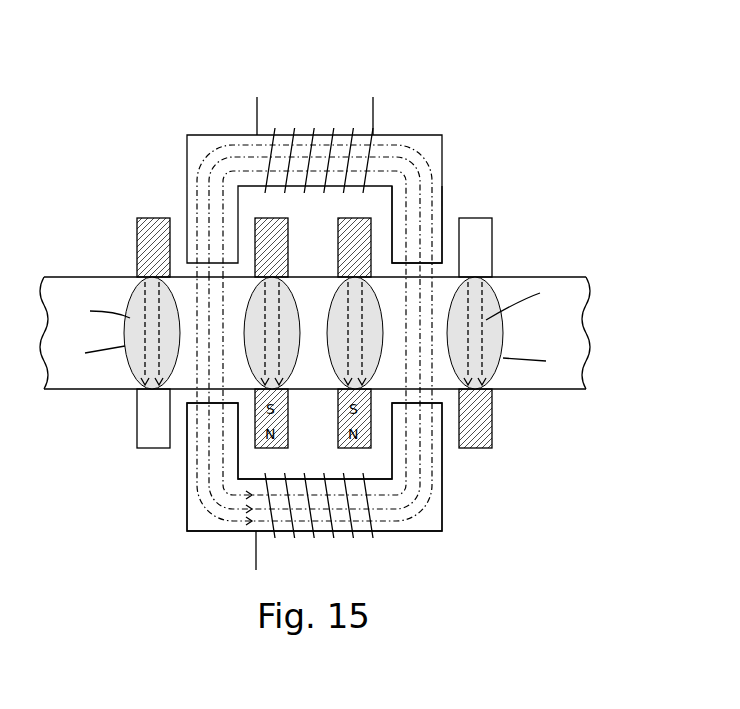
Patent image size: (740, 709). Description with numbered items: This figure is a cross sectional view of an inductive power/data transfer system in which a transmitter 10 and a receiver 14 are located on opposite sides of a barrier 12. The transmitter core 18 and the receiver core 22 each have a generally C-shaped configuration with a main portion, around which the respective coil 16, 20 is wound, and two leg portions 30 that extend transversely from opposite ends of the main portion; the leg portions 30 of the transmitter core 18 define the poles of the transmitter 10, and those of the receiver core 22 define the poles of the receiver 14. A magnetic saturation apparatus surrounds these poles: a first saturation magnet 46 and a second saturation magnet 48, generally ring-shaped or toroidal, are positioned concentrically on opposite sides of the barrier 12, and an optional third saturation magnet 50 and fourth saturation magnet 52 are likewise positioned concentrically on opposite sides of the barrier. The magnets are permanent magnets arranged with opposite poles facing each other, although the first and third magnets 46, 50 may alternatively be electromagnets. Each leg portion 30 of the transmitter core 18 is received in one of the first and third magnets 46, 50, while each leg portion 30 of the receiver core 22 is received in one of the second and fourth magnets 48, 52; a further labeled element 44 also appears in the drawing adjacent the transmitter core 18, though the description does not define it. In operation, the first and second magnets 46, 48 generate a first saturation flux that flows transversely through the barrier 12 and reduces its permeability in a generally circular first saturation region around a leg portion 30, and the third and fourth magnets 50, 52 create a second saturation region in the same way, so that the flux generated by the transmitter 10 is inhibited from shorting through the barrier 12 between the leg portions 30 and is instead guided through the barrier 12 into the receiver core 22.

The transmitter 10 is at (468, 117).
The barrier 12 is at (65, 396).
The receiver 14 is at (473, 507).
The coil 16 is at (333, 128).
The transmitter core 18 is at (217, 132).
The coil 20 is at (293, 542).
The receiver core 22 is at (210, 533).
The leg portions 30 is at (188, 205).
The pole piece 44 is at (446, 232).
The first saturation magnet 46 is at (134, 225).
The second saturation magnet 48 is at (136, 432).
The third saturation magnet 50 is at (497, 229).
The fourth saturation magnet 52 is at (497, 438).